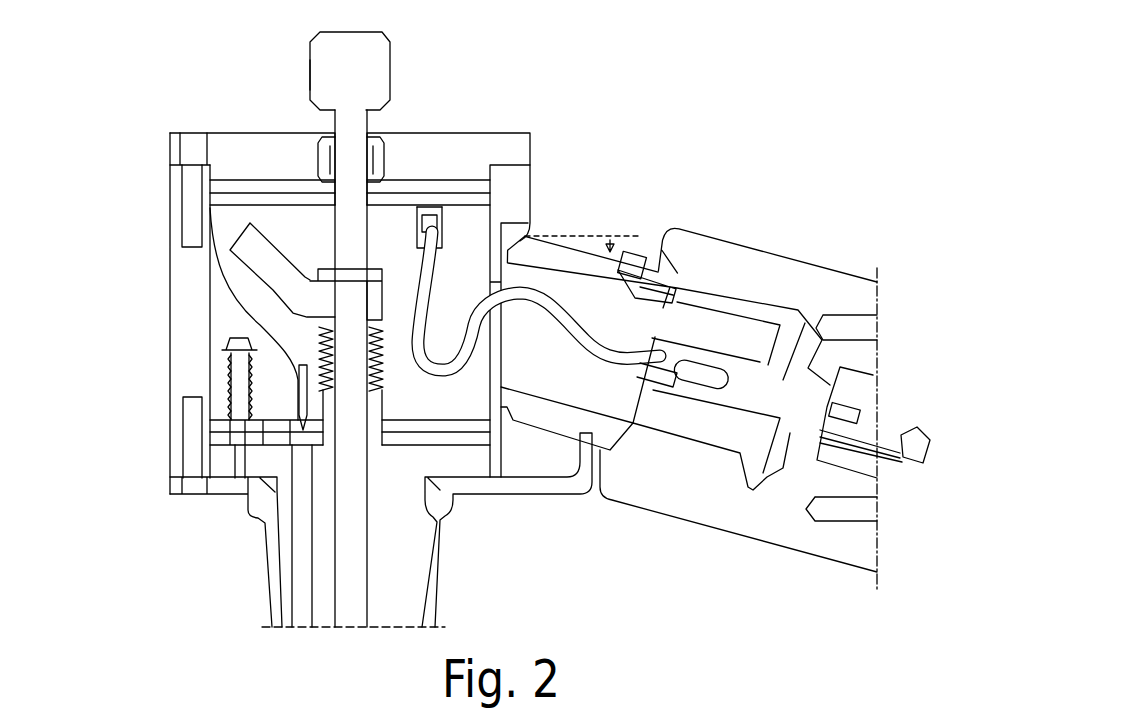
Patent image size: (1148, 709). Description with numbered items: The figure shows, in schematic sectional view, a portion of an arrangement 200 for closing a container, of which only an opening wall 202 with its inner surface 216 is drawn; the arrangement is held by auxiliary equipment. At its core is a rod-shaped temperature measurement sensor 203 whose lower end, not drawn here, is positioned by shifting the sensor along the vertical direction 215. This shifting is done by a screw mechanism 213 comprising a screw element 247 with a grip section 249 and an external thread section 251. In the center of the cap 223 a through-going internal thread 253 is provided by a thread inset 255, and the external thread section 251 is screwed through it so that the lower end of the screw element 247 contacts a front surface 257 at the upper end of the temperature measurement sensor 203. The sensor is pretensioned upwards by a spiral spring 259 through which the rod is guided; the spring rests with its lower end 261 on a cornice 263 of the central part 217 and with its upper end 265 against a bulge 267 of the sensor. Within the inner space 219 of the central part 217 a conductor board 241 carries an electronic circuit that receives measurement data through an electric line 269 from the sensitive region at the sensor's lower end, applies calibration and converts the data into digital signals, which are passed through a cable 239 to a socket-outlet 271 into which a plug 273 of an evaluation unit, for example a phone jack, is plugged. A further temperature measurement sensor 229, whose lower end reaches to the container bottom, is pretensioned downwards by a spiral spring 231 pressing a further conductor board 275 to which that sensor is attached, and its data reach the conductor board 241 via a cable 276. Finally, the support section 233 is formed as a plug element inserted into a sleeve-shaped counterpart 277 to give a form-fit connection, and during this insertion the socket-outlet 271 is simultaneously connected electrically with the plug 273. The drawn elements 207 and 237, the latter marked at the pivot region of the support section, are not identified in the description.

The arrangement for closing a container 200 is at (645, 152).
The opening wall 202 is at (425, 595).
The temperature measurement sensor 203 is at (355, 553).
The right leg 207 is at (400, 523).
The screw mechanism 213 is at (237, 82).
The vertical direction 215 is at (573, 500).
The inner surface 216 is at (420, 620).
The central part 217 is at (124, 188).
The inner space 219 is at (215, 300).
The cap 223 is at (505, 142).
The further temperature measurement sensor 229 is at (300, 563).
The spiral spring 231 is at (225, 375).
The support section 233 is at (665, 230).
The pivot pin 237 is at (600, 234).
The cable 239 is at (430, 358).
The conductor board 241 is at (490, 200).
The screw element 247 is at (402, 66).
The grip section 249 is at (311, 70).
The external thread section 251 is at (382, 125).
The internal thread 253 is at (328, 150).
The thread inset 255 is at (330, 160).
The front surface 257 is at (325, 270).
The spiral spring 259 is at (318, 333).
The lower end 261 is at (385, 380).
The cornice 263 is at (385, 400).
The upper end 265 is at (380, 300).
The bulge 267 is at (382, 290).
The electric line 269 is at (230, 204).
The socket-outlet 271 is at (708, 405).
The plug 273 is at (745, 382).
The further conductor board 275 is at (213, 427).
The cable 276 is at (288, 353).
The sleeve-shaped counterpart 277 is at (700, 245).